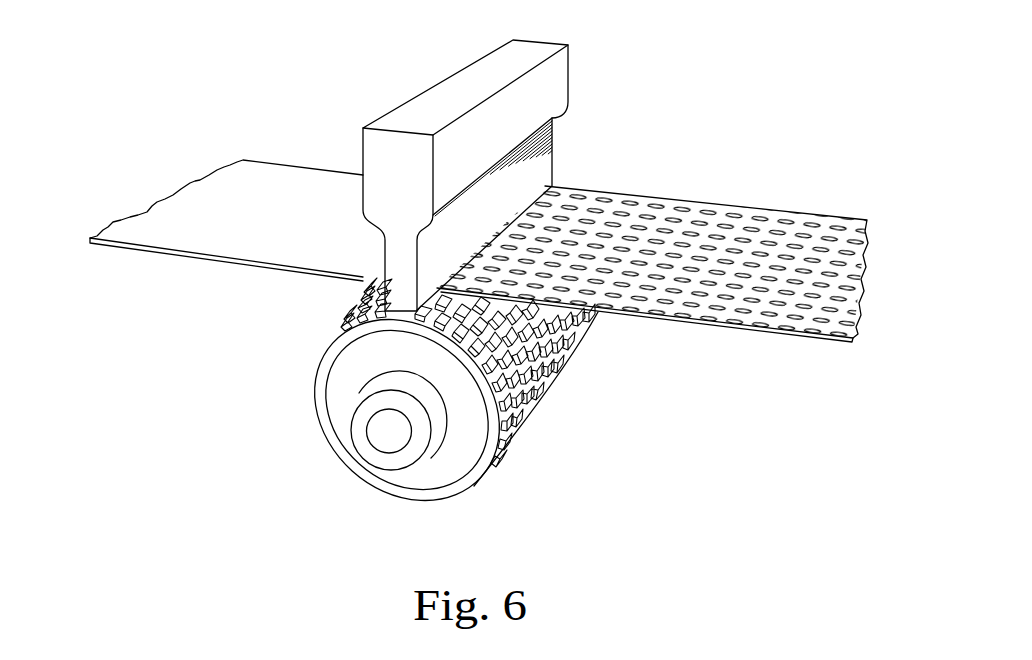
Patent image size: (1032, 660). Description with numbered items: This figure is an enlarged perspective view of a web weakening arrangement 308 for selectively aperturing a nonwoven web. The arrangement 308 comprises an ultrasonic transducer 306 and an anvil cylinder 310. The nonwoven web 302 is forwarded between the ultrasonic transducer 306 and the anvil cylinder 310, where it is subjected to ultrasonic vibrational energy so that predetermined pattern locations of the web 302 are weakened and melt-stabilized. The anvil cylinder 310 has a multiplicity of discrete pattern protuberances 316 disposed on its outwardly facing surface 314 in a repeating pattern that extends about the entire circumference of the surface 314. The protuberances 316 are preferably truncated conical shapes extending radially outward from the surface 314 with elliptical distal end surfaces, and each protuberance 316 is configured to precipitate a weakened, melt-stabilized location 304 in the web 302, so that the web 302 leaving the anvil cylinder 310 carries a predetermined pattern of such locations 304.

The nonwoven web 302 is at (272, 177).
The weakened, melt-stabilized location 304 is at (647, 218).
The ultrasonic transducer 306 is at (460, 82).
The web weakening arrangement 308 is at (300, 442).
The anvil cylinder 310 is at (393, 478).
The outwardly facing surface 314 is at (363, 300).
The protuberances 316 is at (327, 340).